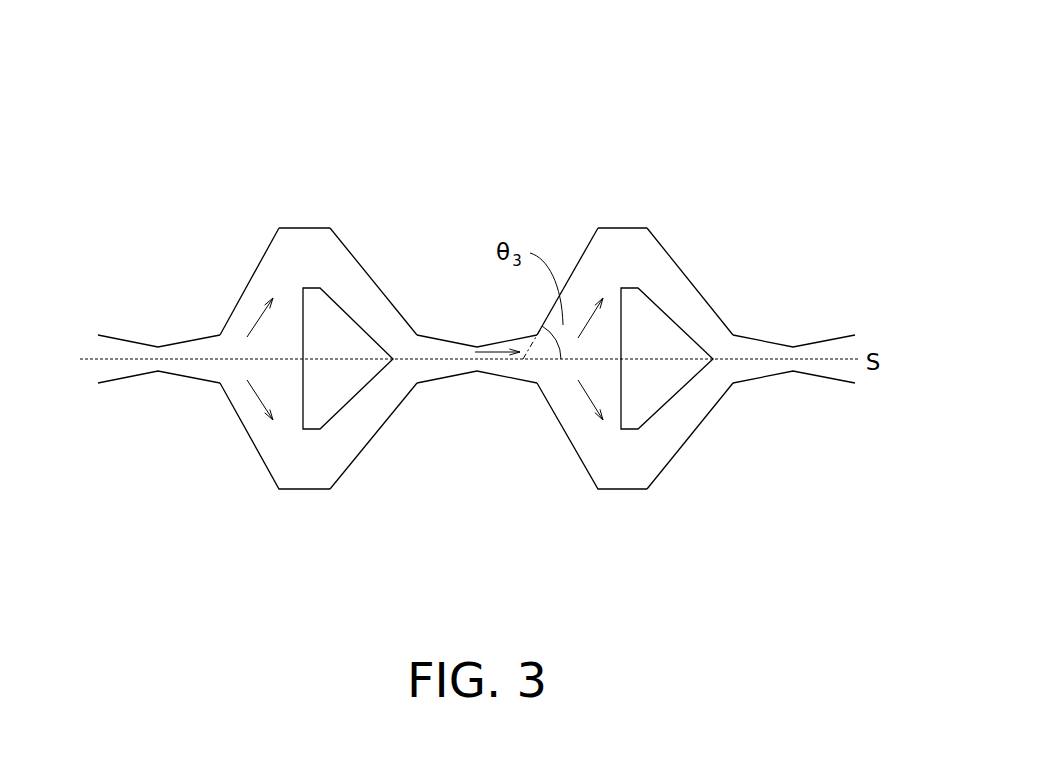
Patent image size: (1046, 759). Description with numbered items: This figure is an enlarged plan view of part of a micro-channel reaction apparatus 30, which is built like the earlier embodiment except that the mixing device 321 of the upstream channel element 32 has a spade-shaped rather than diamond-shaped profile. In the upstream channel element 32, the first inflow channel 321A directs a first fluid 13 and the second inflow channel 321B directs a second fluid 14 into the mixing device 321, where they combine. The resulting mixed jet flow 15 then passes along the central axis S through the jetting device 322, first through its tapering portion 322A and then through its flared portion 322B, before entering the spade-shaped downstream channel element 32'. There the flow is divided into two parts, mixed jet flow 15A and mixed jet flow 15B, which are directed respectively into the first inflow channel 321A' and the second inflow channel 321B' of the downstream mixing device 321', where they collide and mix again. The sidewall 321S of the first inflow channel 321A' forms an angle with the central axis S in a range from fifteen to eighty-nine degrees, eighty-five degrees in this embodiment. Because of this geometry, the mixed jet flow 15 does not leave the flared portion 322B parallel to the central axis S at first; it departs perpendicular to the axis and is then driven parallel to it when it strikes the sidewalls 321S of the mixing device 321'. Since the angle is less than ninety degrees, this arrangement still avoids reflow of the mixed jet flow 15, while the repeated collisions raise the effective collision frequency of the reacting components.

The micro-channel reaction apparatus 30 is at (70, 83).
The first fluid 13 is at (263, 310).
The second fluid 14 is at (257, 400).
The mixed jet flow 15 is at (500, 343).
The mixed jet flow 15A is at (586, 312).
The mixed jet flow 15B is at (573, 387).
The upstream channel element 32 is at (352, 377).
The mixing device 321 is at (382, 318).
The first inflow channel 321A is at (353, 188).
The second inflow channel 321B is at (378, 342).
The jetting device 322 is at (405, 487).
The tapering portion 322A is at (448, 378).
The flared portion 322B is at (505, 377).
The downstream channel element 32' is at (674, 351).
The mixing device 321' is at (674, 294).
The sidewall 321S is at (580, 236).
The first inflow channel 321A' is at (669, 207).
The second inflow channel 321B' is at (729, 311).